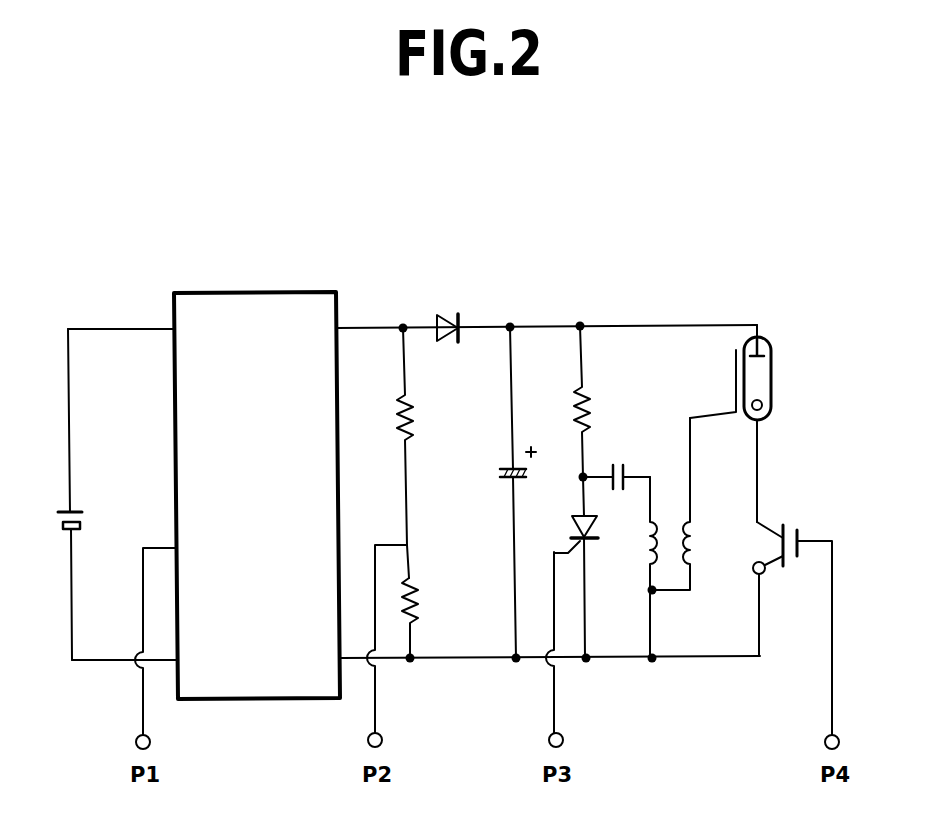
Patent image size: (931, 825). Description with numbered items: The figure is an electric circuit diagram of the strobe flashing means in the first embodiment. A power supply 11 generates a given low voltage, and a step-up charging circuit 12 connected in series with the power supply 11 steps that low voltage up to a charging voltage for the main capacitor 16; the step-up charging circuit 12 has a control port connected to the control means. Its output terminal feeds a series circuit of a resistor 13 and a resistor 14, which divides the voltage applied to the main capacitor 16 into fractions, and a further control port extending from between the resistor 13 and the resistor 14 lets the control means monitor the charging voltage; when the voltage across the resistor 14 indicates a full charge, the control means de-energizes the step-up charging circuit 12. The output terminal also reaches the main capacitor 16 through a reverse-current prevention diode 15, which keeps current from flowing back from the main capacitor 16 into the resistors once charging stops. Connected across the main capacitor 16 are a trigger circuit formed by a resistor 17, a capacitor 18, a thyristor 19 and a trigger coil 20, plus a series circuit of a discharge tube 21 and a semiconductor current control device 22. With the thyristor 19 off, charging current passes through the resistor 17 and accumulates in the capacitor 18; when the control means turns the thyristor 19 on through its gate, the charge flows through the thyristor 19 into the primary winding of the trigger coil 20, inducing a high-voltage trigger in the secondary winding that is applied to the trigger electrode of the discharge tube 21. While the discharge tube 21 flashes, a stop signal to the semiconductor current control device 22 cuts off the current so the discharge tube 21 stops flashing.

The power supply 11 is at (78, 510).
The step-up charging circuit 12 is at (338, 298).
The resistor 13 is at (425, 453).
The resistor 14 is at (427, 618).
The reverse-current prevention diode 15 is at (448, 315).
The main capacitor 16 is at (499, 492).
The resistor 17 is at (562, 401).
The capacitor 18 is at (616, 462).
The thyristor 19 is at (565, 567).
The trigger coil 20 is at (645, 538).
The discharge tube 21 is at (772, 371).
The semiconductor current control device 22 is at (790, 524).